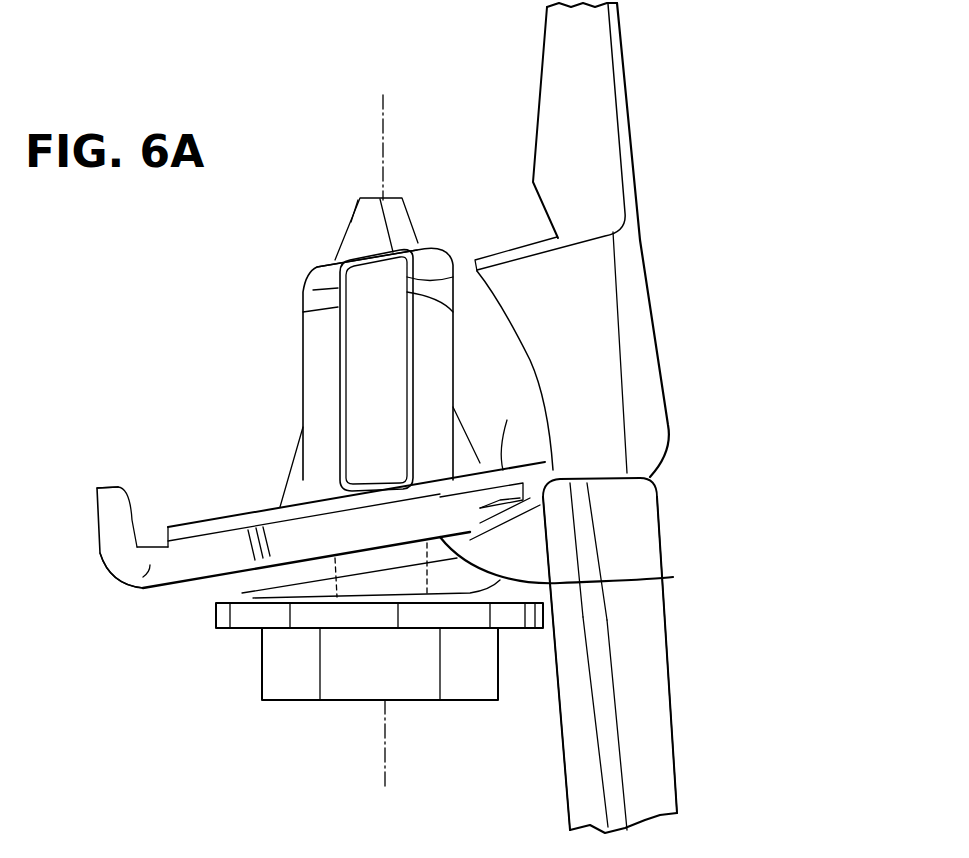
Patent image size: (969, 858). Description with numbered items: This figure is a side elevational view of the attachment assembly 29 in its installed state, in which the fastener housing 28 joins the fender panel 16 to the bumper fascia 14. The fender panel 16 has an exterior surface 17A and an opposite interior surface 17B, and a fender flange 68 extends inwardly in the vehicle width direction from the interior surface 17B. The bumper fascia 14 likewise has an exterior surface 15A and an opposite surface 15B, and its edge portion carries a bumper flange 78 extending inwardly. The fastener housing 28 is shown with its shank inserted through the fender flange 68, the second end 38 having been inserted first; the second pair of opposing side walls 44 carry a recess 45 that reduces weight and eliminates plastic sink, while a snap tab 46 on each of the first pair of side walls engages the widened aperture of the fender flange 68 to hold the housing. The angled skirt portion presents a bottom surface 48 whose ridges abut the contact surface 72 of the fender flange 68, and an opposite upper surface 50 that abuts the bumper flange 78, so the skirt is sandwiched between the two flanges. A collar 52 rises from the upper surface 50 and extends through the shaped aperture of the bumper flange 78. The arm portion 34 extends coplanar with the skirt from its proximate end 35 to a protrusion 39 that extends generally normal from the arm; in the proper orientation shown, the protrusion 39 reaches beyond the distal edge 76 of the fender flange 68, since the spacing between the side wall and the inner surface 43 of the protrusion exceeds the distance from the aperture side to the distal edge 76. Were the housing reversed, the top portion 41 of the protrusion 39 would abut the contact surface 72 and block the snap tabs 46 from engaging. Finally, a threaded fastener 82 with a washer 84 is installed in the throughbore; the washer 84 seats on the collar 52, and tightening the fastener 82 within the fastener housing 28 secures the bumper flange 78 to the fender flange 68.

The bumper fascia 14 is at (648, 677).
The exterior surface 15A is at (675, 757).
The arm web 15B is at (577, 765).
The fender panel 16 is at (597, 77).
The exterior surface 17A is at (633, 155).
The interior surface 17B is at (560, 112).
The fastener housing 28 is at (275, 280).
The attachment assembly 29 is at (108, 305).
The arm portion 34 is at (143, 590).
The proximate end 35 is at (240, 525).
The second end 38 is at (330, 265).
The protrusion 39 is at (110, 537).
The top portion 41 is at (108, 487).
The inner surface 43 is at (140, 520).
The second pair of opposing side walls 44 is at (325, 355).
The recess 45 is at (377, 343).
The snap tab 46 is at (275, 440).
The bottom surface 48 is at (265, 535).
The upper surface 50 is at (673, 577).
The collar 52 is at (427, 573).
The fender flange 68 is at (487, 462).
The contact surface 72 is at (543, 465).
The distal edge 76 is at (152, 545).
The bumper flange 78 is at (215, 595).
The fastener 82 is at (400, 235).
The washer 84 is at (215, 622).